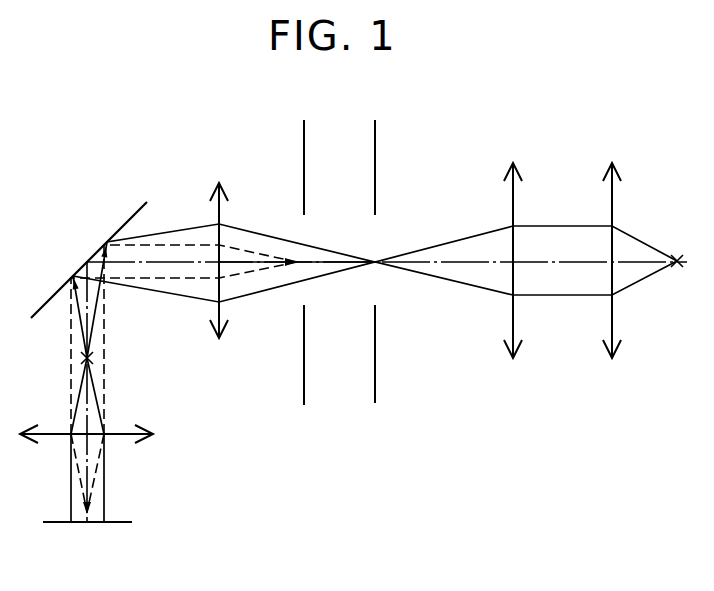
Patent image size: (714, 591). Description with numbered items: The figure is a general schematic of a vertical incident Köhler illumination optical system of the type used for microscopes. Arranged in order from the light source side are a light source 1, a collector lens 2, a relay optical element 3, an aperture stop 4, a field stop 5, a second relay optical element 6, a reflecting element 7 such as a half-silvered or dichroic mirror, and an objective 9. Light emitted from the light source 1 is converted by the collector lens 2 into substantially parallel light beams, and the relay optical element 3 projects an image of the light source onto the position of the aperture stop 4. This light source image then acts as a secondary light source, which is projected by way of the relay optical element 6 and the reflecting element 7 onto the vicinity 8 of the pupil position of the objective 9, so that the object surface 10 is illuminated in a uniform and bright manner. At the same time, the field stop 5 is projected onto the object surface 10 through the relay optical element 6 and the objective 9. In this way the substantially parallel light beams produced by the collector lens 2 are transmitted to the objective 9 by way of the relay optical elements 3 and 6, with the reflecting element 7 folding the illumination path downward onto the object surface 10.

The light source 1 is at (677, 268).
The collector lens 2 is at (615, 320).
The relay optical element 3 is at (515, 322).
The aperture stop 4 is at (375, 385).
The field stop 5 is at (304, 382).
The relay optical element 6 is at (215, 217).
The reflecting element 7 is at (138, 210).
The vicinity of the pupil position of the objective 8 is at (89, 359).
The objective 9 is at (123, 437).
The object surface 10 is at (123, 522).